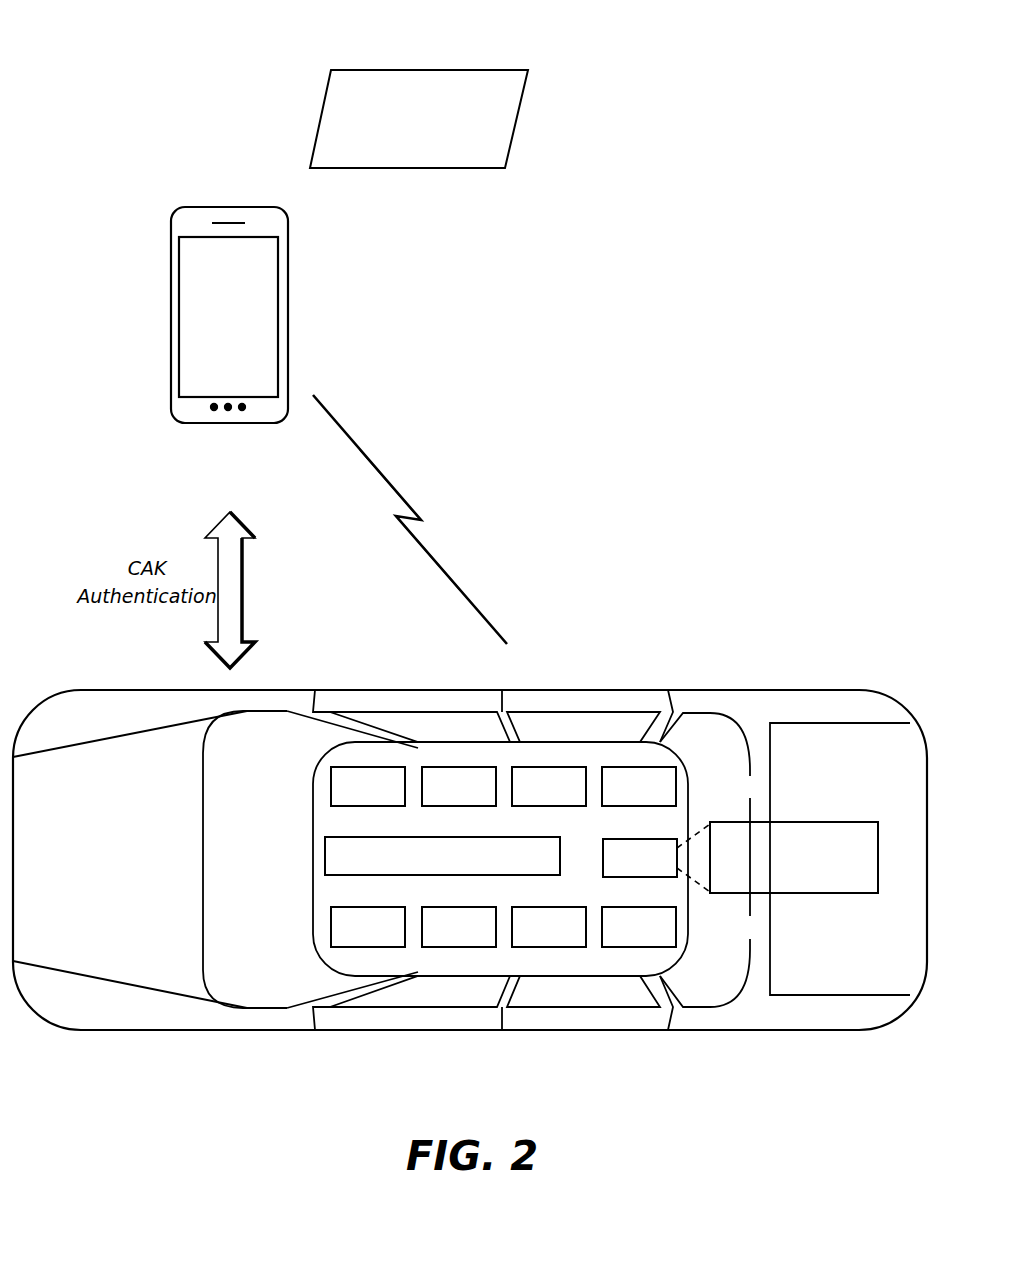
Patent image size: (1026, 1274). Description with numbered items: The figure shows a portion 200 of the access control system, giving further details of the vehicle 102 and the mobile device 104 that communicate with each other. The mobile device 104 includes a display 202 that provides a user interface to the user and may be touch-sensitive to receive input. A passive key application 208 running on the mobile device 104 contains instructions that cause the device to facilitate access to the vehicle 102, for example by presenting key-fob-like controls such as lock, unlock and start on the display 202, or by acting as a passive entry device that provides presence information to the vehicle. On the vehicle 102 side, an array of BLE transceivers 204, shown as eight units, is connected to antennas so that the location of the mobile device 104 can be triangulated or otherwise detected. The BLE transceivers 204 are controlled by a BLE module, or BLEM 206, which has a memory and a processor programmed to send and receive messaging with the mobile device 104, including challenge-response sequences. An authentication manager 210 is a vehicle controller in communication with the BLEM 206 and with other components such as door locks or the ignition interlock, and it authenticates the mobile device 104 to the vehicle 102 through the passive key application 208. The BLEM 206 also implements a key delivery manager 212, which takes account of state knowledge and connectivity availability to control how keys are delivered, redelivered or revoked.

The system 200 is at (167, 27).
The passive key application 208 is at (288, 265).
The mobile device 104 is at (229, 349).
The display 202 is at (179, 297).
The vehicle 102 is at (470, 891).
The BLE transceivers 204 is at (700, 768).
The authentication manager 210 is at (562, 857).
The BLE module (BLEM) 206 is at (638, 839).
The key delivery manager 212 is at (818, 821).